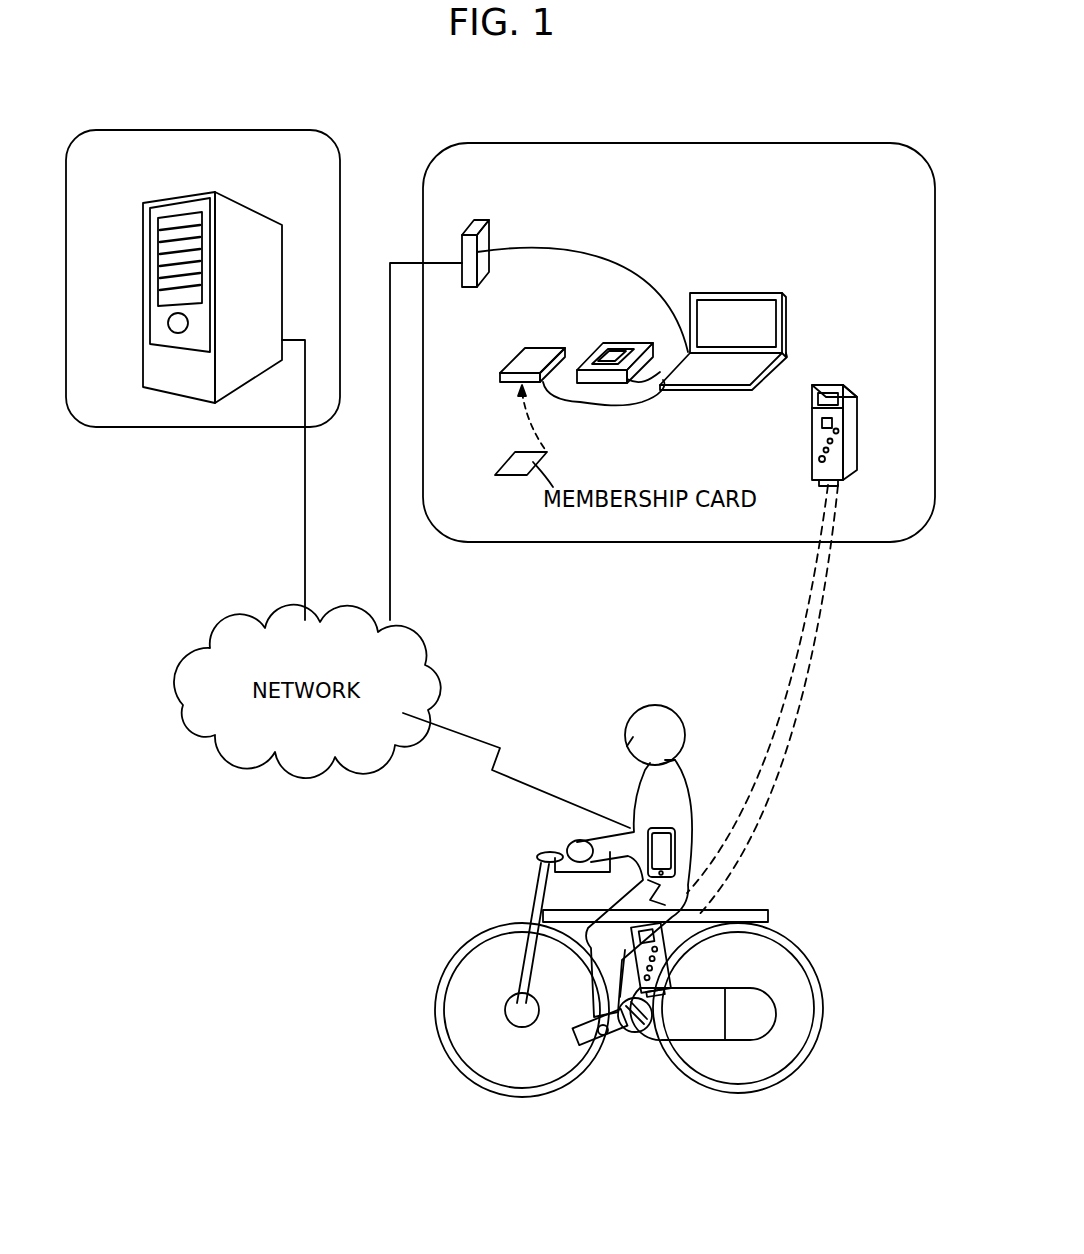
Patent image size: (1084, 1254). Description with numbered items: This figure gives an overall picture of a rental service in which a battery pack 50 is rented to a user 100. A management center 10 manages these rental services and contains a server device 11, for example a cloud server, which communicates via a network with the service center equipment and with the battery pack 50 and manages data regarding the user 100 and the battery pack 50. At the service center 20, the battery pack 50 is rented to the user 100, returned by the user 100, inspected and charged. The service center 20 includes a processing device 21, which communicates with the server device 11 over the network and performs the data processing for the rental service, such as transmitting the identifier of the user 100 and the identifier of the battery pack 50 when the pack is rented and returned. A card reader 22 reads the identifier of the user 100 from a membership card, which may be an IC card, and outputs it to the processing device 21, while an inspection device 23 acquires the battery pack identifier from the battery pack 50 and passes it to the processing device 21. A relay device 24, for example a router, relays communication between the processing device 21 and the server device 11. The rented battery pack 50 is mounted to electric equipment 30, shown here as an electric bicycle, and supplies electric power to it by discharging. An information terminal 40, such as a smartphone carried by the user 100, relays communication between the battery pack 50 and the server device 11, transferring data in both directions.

The management center 10 is at (215, 130).
The server device 11 is at (299, 259).
The service center 20 is at (680, 143).
The processing device 21 is at (725, 293).
The card reader 22 is at (545, 348).
The inspection device 23 is at (625, 343).
The relay device 24 is at (485, 222).
The electric equipment 30 is at (540, 883).
The information terminal 40 is at (678, 826).
The battery pack 50 is at (857, 412).
The user 100 is at (664, 703).